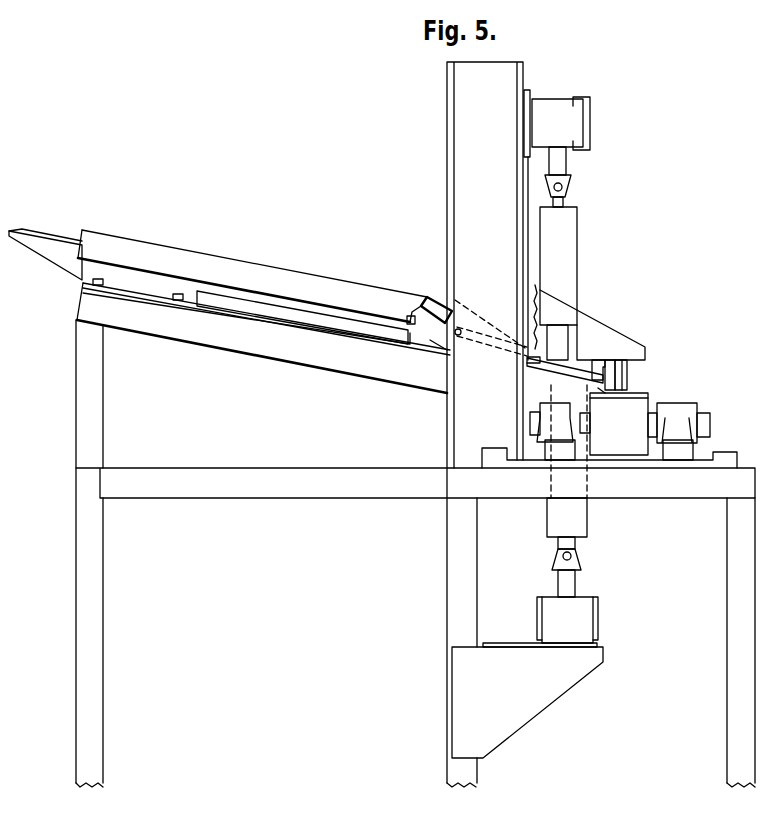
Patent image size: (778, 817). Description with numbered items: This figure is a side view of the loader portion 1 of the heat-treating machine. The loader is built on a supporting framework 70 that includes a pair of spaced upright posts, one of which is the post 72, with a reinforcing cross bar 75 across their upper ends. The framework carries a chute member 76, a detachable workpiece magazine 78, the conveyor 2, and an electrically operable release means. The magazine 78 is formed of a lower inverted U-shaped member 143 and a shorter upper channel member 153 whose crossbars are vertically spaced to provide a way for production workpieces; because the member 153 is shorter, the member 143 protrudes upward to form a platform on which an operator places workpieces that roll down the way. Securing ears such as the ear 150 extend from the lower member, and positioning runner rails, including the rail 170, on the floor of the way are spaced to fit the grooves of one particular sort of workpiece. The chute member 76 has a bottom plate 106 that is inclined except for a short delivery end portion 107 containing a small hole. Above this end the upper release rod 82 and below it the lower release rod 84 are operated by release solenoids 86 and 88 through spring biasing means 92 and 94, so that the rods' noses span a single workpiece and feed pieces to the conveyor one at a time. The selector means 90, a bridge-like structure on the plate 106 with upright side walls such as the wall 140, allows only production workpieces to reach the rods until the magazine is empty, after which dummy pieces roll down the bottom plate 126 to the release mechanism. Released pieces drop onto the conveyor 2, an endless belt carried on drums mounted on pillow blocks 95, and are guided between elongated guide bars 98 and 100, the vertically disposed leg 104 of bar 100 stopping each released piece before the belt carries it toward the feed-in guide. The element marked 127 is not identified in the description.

The loader portion 1 is at (365, 196).
The conveyor 2 is at (642, 398).
The supporting framework 70 is at (428, 498).
The upright post 72 is at (446, 137).
The reinforcing cross bar 75 is at (537, 100).
The chute member 76 is at (338, 327).
The workpiece magazine 78 is at (280, 273).
The release rod 82 is at (566, 340).
The release rod 84 is at (562, 390).
The release solenoid 86 is at (577, 122).
The release solenoid 88 is at (588, 618).
The selector means 90 is at (442, 307).
The spring biasing means 92 is at (570, 260).
The spring biasing means 94 is at (587, 519).
The pillow block 95 is at (537, 430).
The guide bar 98 is at (606, 366).
The guide bar 100 is at (632, 360).
The vertically disposed leg 104 is at (627, 379).
The bottom plate 106 is at (373, 348).
The delivery end portion 107 is at (598, 392).
The bottom plate 126 is at (533, 378).
The bracket 127 is at (593, 366).
The upright side wall 140 is at (432, 337).
The lower inverted U-shaped member 143 is at (30, 238).
The securing ear 150 is at (123, 297).
The upper channel member 153 is at (138, 248).
The positioning runner rail 170 is at (62, 233).